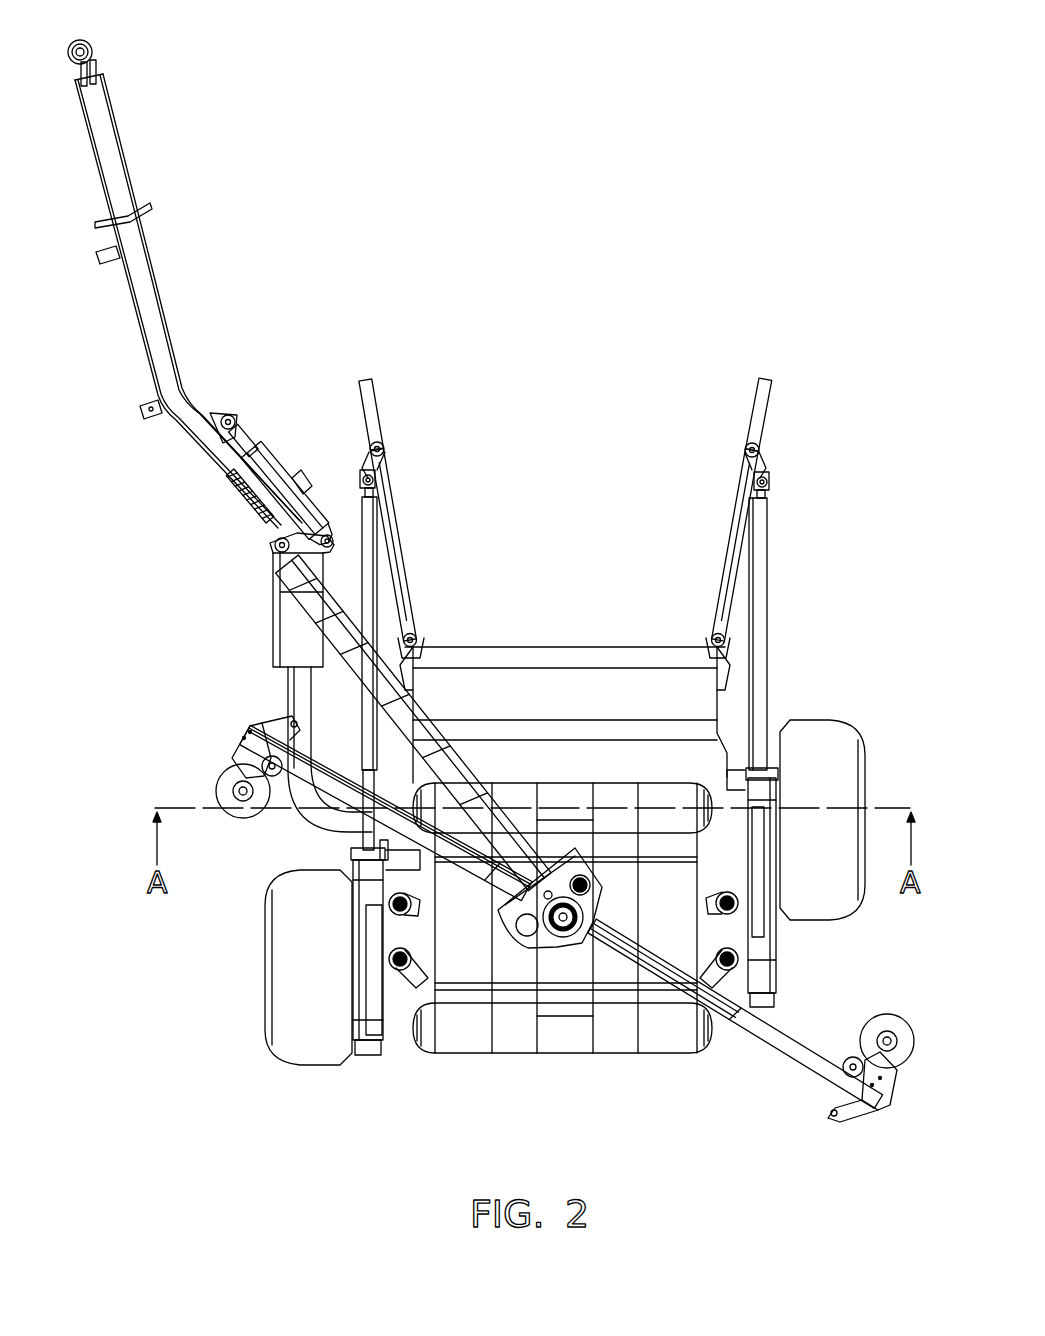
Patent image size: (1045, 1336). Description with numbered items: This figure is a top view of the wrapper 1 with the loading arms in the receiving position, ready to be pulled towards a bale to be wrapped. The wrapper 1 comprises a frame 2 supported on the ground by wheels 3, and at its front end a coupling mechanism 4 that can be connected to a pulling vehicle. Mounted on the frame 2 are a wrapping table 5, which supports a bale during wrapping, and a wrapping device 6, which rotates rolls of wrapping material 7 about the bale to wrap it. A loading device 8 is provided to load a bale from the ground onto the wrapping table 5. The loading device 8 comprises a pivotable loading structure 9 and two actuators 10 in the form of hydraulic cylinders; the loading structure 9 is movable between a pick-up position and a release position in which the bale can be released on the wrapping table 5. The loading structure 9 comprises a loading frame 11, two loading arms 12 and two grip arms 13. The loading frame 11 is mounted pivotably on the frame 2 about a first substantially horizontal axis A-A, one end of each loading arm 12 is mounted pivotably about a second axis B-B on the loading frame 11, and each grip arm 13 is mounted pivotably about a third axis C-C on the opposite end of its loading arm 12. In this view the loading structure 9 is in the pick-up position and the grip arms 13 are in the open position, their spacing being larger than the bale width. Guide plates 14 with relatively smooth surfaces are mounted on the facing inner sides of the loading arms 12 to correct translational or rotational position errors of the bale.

The wrapper 1 is at (283, 330).
The frame 2 is at (297, 702).
The wheels 3 is at (290, 1057).
The coupling mechanism 4 is at (90, 58).
The wrapping table 5 is at (473, 1040).
The wrapping device 6 is at (572, 943).
The rolls of wrapping material 7 is at (232, 813).
The loading device 8 is at (598, 530).
The pivotable loading structure 9 is at (565, 487).
The actuators 10 is at (370, 534).
The loading frame 11 is at (545, 656).
The loading arms 12 is at (387, 510).
The grip arms 13 is at (372, 417).
The guide plates 14 is at (560, 559).